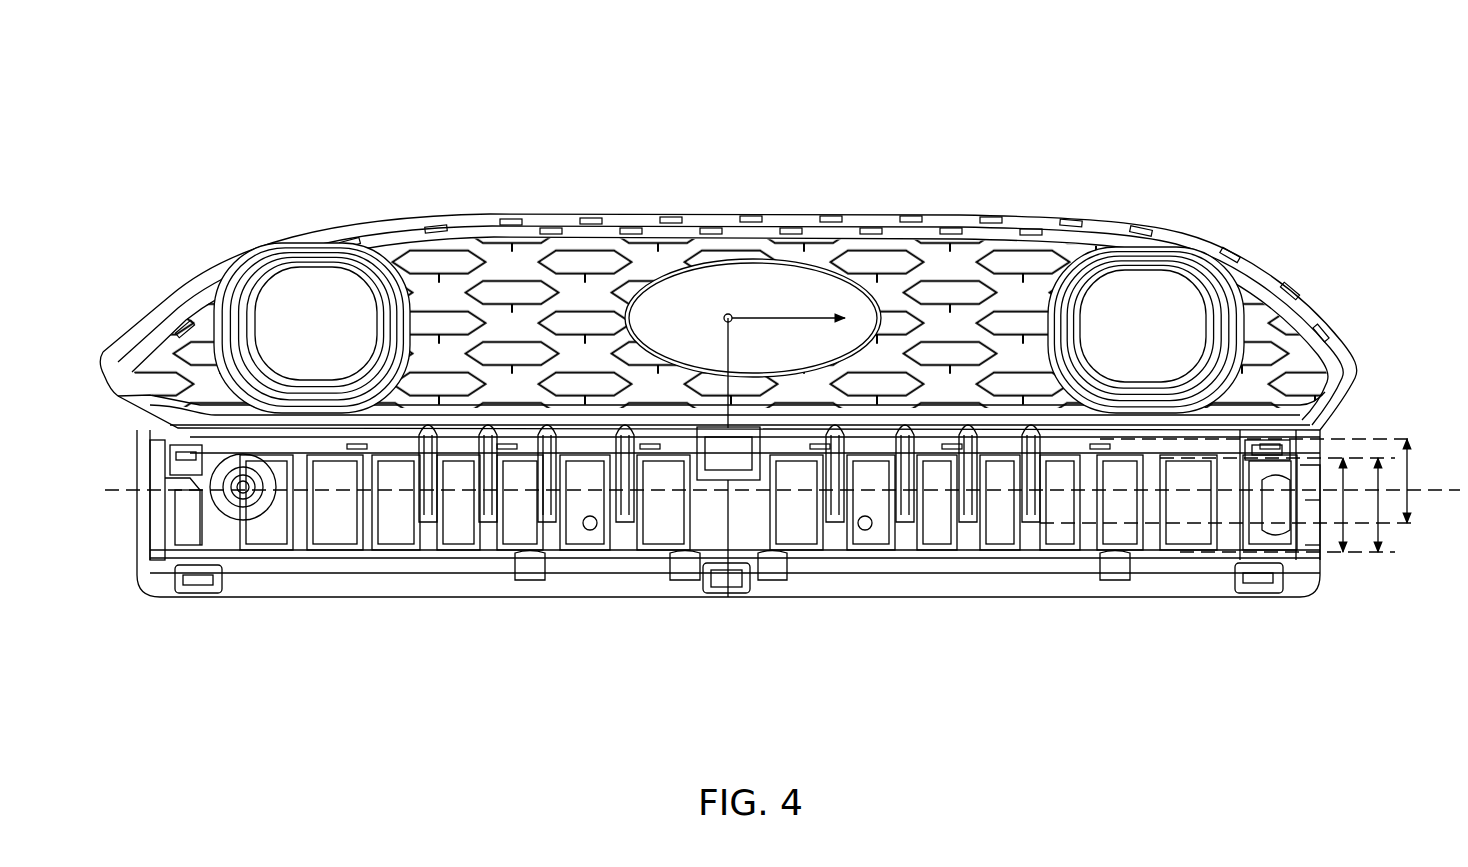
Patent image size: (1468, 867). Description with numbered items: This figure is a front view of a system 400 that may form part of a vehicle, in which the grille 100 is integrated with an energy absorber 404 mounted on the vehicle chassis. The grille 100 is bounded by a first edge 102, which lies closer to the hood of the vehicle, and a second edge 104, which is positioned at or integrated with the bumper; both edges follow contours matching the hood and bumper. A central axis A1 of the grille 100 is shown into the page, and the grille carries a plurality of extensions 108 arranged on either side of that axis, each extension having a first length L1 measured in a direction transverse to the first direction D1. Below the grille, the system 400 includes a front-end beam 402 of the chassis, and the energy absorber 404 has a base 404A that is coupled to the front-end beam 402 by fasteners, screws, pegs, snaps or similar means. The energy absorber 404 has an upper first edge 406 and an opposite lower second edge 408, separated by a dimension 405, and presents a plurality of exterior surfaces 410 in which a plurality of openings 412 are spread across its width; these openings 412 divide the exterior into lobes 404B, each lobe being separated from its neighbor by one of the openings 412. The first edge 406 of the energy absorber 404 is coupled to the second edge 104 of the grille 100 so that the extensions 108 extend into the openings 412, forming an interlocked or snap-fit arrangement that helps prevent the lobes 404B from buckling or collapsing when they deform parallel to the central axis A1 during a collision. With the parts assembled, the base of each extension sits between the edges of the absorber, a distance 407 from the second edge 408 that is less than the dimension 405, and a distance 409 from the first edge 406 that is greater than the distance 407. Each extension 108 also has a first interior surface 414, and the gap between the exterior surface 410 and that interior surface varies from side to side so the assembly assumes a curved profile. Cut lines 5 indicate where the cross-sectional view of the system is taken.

The system 400 is at (1275, 82).
The grille 100 is at (988, 150).
The first edge 102 is at (1118, 222).
The second edge 104 is at (1323, 430).
The extensions 108 is at (835, 527).
The front-end beam 402 is at (147, 478).
The energy absorber 404 is at (713, 625).
The base 404A is at (563, 573).
The lobes 404B is at (465, 550).
The dimension 405 is at (1380, 527).
The first edge 406 is at (1193, 527).
The distance 407 is at (1350, 533).
The second edge 408 is at (1322, 560).
The distance 409 is at (1345, 483).
The exterior surfaces 410 is at (658, 513).
The openings 412 is at (830, 533).
The first interior surface 414 is at (1003, 468).
The central axis A1 is at (726, 312).
The first direction D1 is at (788, 302).
The first length L1 is at (1239, 495).
The cut lines 5- 5 is at (114, 488).